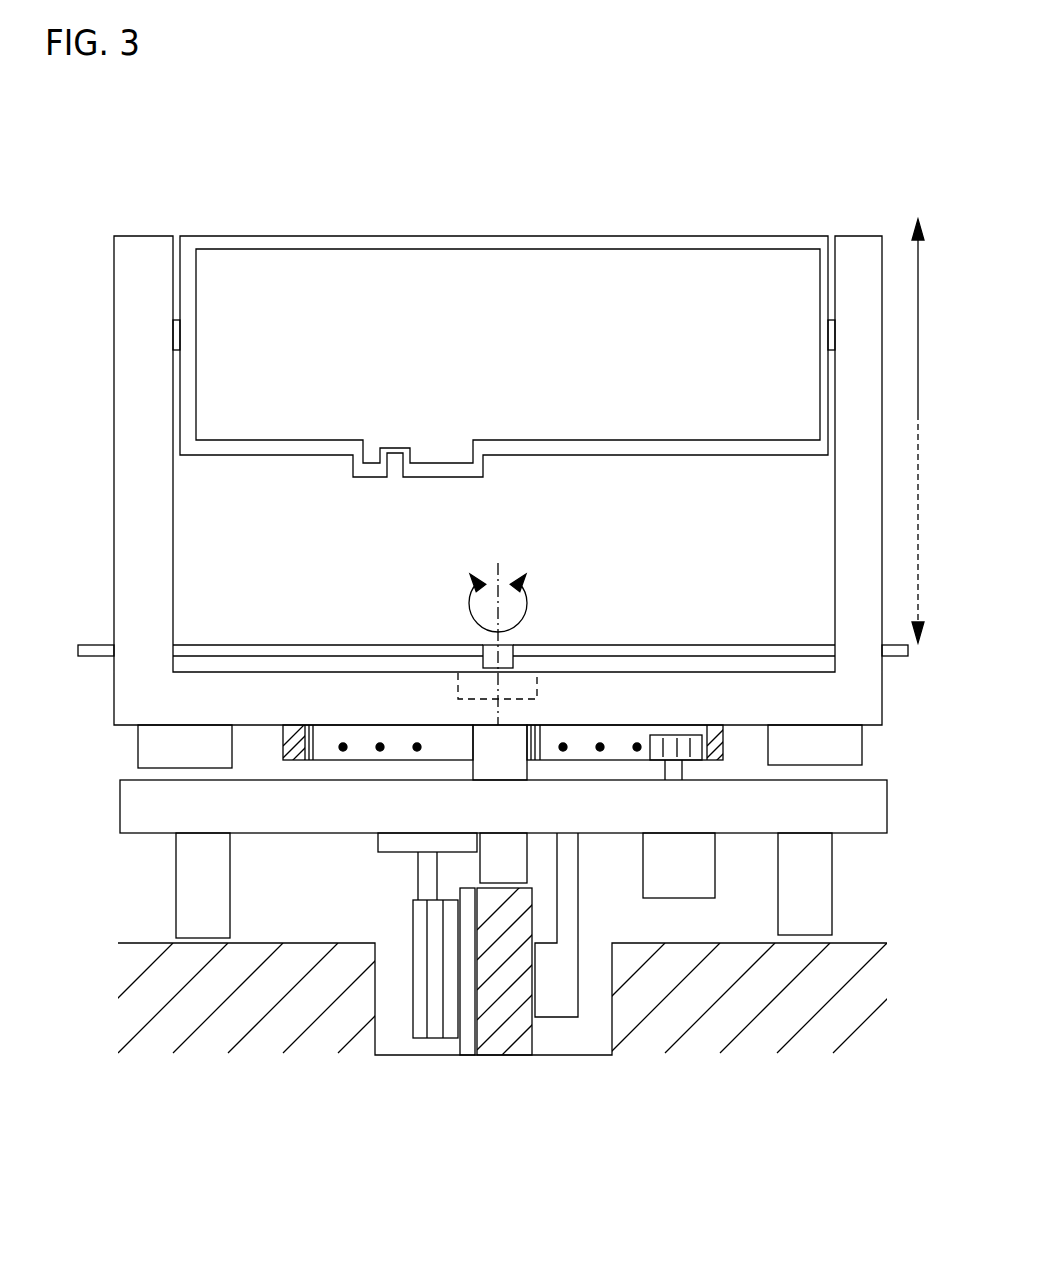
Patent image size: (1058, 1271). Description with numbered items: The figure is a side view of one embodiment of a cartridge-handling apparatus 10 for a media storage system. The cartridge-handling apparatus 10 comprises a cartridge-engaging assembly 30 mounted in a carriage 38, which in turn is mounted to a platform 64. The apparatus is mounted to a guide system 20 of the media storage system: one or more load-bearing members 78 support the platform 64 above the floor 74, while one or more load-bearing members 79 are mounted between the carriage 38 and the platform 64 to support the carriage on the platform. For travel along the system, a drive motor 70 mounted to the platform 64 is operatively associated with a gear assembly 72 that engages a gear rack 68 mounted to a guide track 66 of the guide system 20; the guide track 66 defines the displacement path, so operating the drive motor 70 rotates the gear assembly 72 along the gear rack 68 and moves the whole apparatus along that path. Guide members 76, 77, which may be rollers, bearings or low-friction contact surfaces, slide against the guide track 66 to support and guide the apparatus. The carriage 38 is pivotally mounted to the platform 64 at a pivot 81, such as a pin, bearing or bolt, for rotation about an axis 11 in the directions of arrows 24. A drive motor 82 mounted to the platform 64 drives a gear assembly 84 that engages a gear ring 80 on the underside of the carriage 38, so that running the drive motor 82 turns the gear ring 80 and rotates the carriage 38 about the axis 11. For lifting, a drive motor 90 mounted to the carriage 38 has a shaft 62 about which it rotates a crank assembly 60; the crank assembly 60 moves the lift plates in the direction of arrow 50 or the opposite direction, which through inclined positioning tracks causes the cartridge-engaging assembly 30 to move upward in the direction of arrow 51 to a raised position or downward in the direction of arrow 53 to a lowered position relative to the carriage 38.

The cartridge-handling apparatus 10 is at (748, 162).
The cartridge-engaging assembly 30 is at (516, 228).
The carriage 38 is at (184, 577).
The arrow 50 is at (899, 413).
The arrow 51 is at (916, 384).
The arrow 53 is at (920, 478).
The axis 11 is at (499, 563).
The arrows 24 is at (469, 612).
The crank assembly 60 is at (635, 645).
The shaft 62 is at (513, 645).
The drive motor 90 is at (516, 698).
The platform 64 is at (120, 818).
The load-bearing members 79 is at (864, 748).
The gear ring 80 is at (725, 737).
The gear assembly 84 is at (667, 776).
The pivot 81 is at (498, 783).
The drive motor 70 is at (378, 855).
The guide member 77 is at (518, 872).
The gear assembly 72 is at (413, 973).
The drive motor 82 is at (650, 899).
The load-bearing members 78 is at (834, 916).
The floor 74 is at (120, 943).
The guide member 76 is at (546, 1018).
The gear rack 68 is at (460, 1049).
The guide system 20 is at (478, 1072).
The guide track 66 is at (507, 1056).